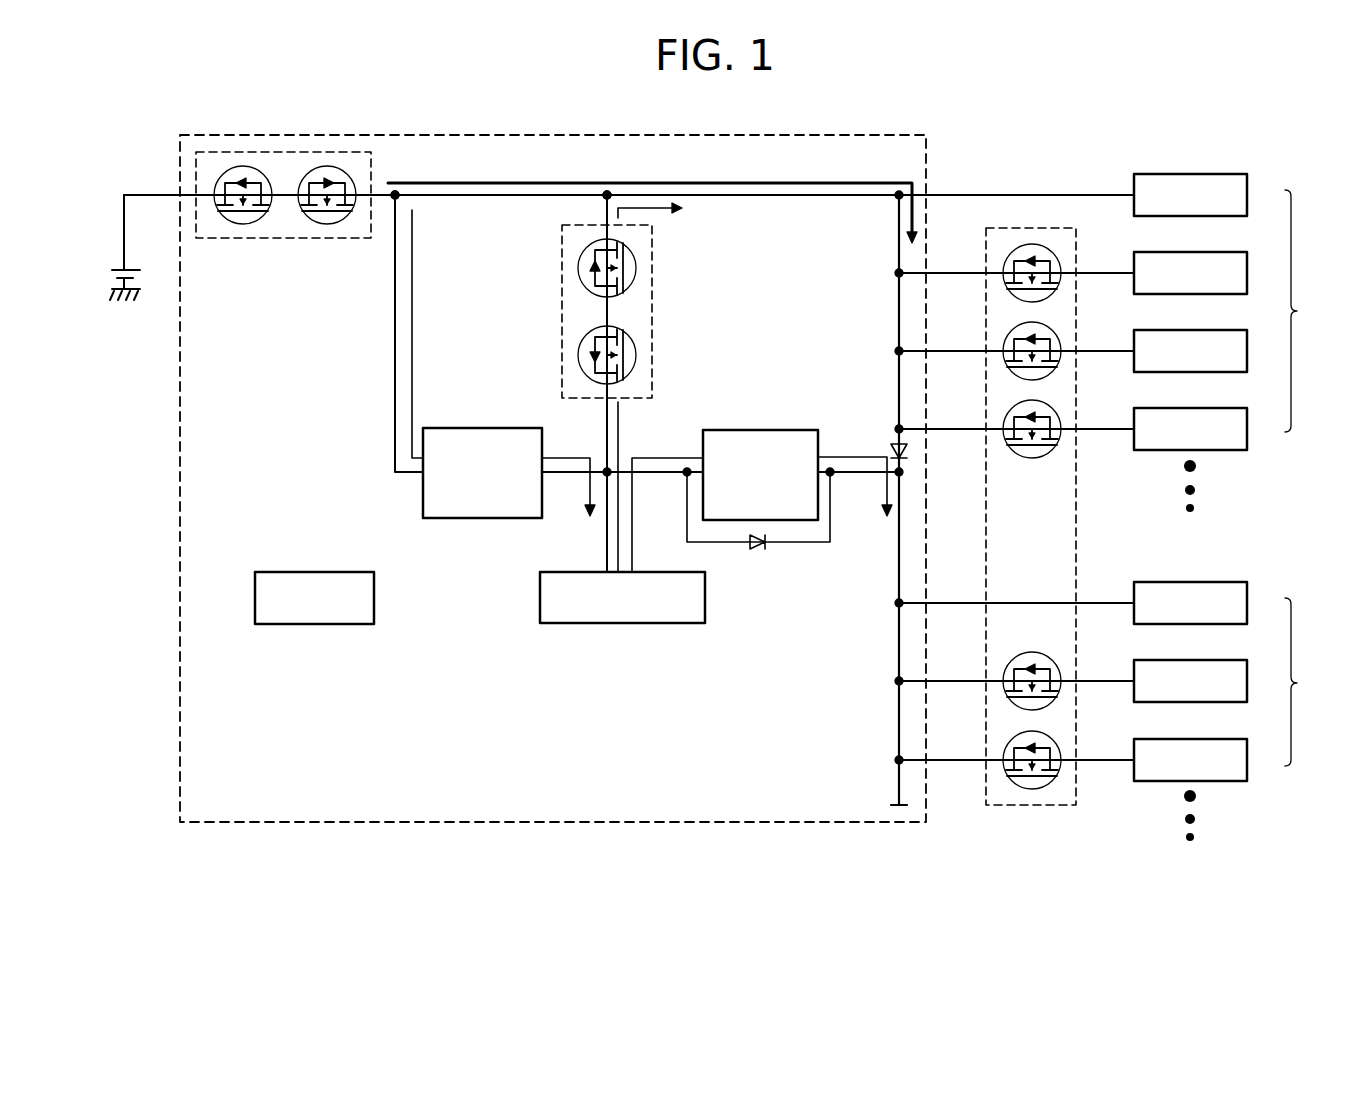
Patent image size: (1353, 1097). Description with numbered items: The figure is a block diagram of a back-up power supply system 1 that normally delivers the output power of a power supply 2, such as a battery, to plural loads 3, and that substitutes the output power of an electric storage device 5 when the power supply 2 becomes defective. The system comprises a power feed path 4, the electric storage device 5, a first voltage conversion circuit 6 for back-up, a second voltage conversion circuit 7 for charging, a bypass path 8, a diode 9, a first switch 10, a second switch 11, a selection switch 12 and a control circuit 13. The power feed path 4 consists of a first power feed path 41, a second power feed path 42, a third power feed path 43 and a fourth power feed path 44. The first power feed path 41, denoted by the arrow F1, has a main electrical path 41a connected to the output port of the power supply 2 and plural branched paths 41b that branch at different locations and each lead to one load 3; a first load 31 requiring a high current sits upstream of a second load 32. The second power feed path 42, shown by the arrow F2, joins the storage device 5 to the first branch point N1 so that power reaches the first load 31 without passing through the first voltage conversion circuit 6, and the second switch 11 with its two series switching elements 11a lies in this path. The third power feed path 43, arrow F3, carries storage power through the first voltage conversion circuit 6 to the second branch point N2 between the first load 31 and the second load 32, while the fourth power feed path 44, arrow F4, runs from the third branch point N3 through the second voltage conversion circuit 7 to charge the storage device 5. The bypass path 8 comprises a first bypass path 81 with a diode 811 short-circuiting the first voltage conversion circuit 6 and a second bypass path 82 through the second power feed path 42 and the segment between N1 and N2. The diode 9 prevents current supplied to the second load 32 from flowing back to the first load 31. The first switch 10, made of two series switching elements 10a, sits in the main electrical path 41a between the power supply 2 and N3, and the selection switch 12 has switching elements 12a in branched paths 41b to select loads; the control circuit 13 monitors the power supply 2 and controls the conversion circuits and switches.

The back-up power supply system 1 is at (178, 791).
The power supply 2 is at (137, 282).
The loads 3 is at (1249, 195).
The power feed path 4 is at (629, 451).
The first power feed path 41 is at (437, 202).
The main electrical path 41a is at (503, 208).
The branched paths 41b is at (1097, 193).
The second power feed path 42 is at (604, 441).
The third power feed path 43 is at (650, 476).
The fourth power feed path 44 is at (393, 322).
The electric storage device 5 is at (567, 625).
The first voltage conversion circuit 6 is at (776, 430).
The second voltage conversion circuit 7 is at (441, 521).
The bypass path 8 is at (652, 361).
The first bypass path 81 is at (832, 492).
The second bypass path 82 is at (792, 197).
The diode 811 is at (760, 552).
The diode 9 is at (893, 444).
The first switch 10 is at (283, 231).
The switching elements 10a is at (237, 224).
The second switch 11 is at (630, 383).
The switching elements 11a is at (578, 270).
The selection switch 12 is at (1009, 545).
The switching elements 12a is at (1006, 265).
The control circuit 13 is at (277, 572).
The first load 31 is at (1305, 311).
The second load 32 is at (1305, 682).
The first branch point N1 is at (602, 197).
The second branch point N2 is at (905, 475).
The third branch point N3 is at (392, 200).
The arrow F1 is at (825, 184).
The arrow F2 is at (622, 420).
The arrow F3 is at (634, 550).
The arrow F4 is at (414, 355).